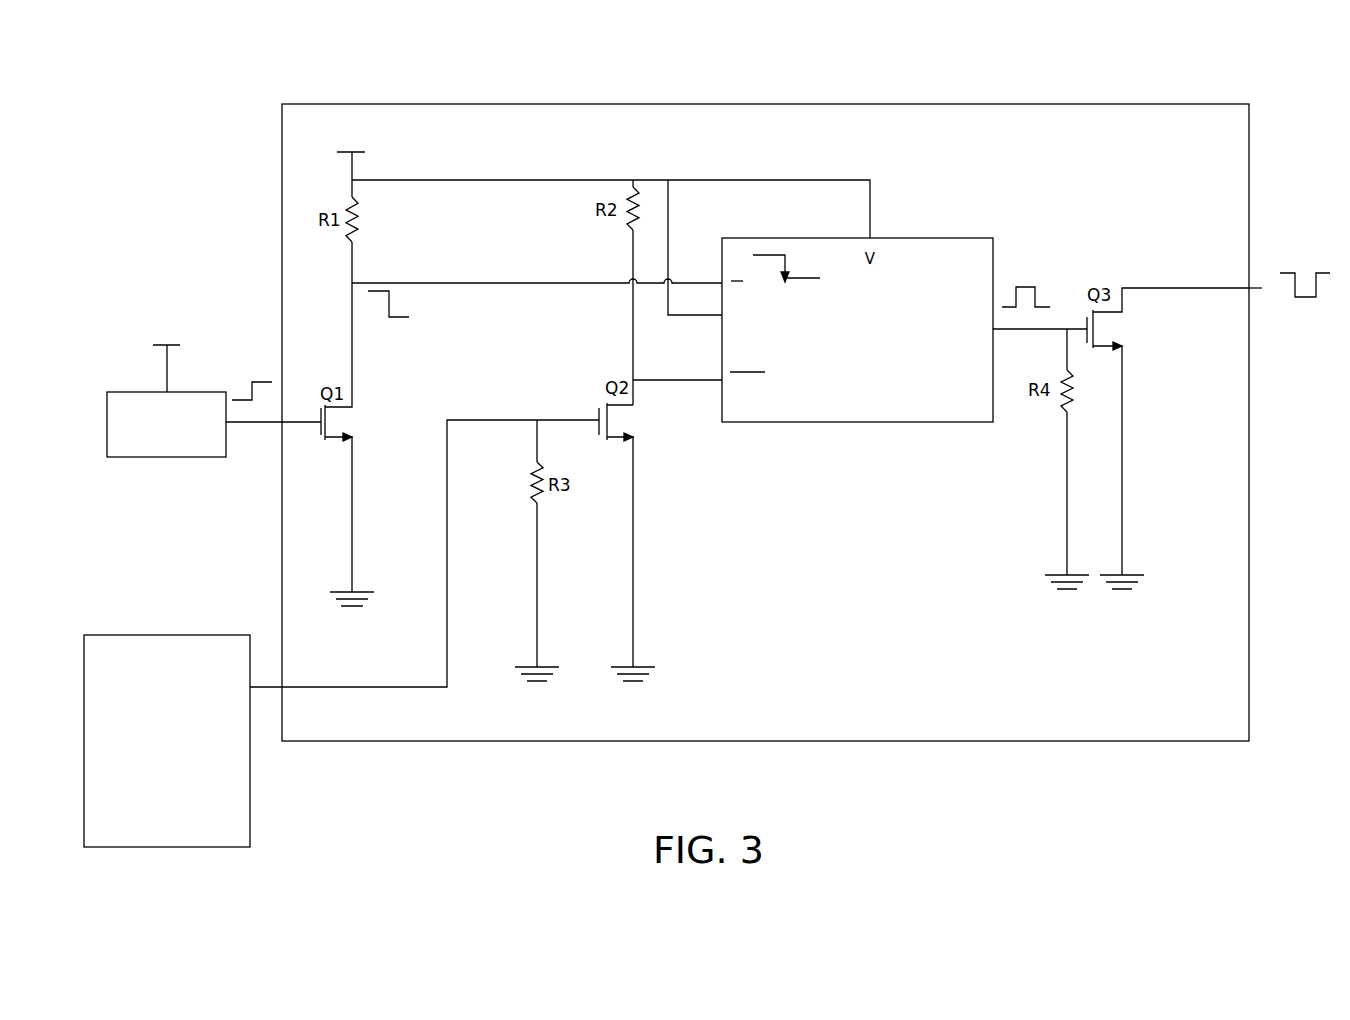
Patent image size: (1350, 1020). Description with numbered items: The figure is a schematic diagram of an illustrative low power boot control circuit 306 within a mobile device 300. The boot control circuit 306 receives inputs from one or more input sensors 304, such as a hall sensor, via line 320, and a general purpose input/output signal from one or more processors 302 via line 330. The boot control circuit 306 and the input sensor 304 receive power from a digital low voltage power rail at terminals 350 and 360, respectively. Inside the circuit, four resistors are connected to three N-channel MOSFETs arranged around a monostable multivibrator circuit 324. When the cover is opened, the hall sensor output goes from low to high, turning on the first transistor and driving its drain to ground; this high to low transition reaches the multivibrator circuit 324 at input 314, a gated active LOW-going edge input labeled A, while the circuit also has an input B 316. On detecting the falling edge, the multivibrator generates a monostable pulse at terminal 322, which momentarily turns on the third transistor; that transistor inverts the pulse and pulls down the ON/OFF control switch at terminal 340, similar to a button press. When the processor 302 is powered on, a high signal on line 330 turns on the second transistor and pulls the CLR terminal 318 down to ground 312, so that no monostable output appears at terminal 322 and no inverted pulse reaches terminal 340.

The mobile device 300 is at (945, 66).
The processor 302 is at (250, 812).
The input sensor 304 is at (197, 392).
The boot control circuit 306 is at (643, 104).
The ground 312 is at (636, 666).
The input A 314 is at (537, 273).
The input B 316 is at (695, 248).
The CLR terminal 318 is at (677, 371).
The line 320 is at (257, 422).
The terminal 322 is at (1021, 312).
The monostable multivibrator circuit 324 is at (945, 238).
The line 330 is at (262, 687).
The terminal 340 is at (1249, 288).
The terminal 350 is at (351, 151).
The terminal 360 is at (167, 344).